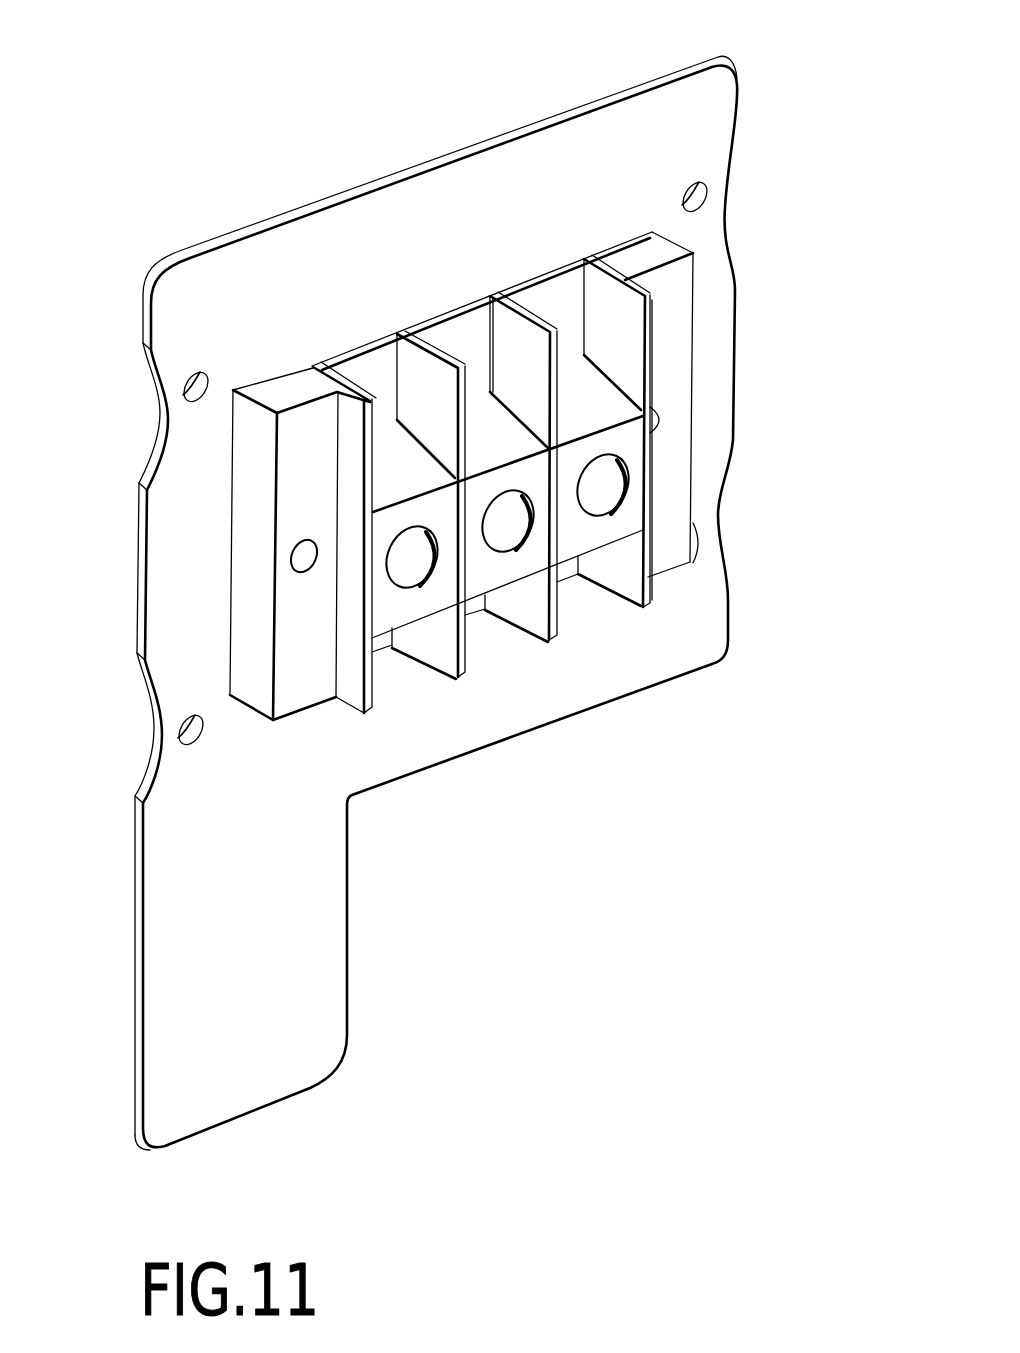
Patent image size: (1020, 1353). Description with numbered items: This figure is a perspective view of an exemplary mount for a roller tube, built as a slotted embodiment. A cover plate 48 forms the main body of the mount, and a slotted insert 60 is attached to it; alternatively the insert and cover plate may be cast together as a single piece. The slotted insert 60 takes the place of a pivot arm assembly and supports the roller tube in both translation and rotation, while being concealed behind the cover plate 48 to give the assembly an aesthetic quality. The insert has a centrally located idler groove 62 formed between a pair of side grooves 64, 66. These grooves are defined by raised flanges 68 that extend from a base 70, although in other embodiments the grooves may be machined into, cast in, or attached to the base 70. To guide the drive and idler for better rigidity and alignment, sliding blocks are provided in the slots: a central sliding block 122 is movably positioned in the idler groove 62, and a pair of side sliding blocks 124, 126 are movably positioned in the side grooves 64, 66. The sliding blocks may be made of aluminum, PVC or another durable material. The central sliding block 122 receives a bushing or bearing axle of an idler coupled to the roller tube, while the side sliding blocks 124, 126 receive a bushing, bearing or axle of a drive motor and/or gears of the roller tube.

The cover plate 48 is at (338, 975).
The slotted insert 60 is at (243, 556).
The idler groove 62 is at (472, 323).
The side groove 64 is at (578, 588).
The side groove 66 is at (397, 663).
The raised flanges 68 is at (653, 333).
The base 70 is at (680, 450).
The central sliding block 122 is at (505, 567).
The side sliding block 124 is at (585, 385).
The side sliding block 126 is at (403, 455).